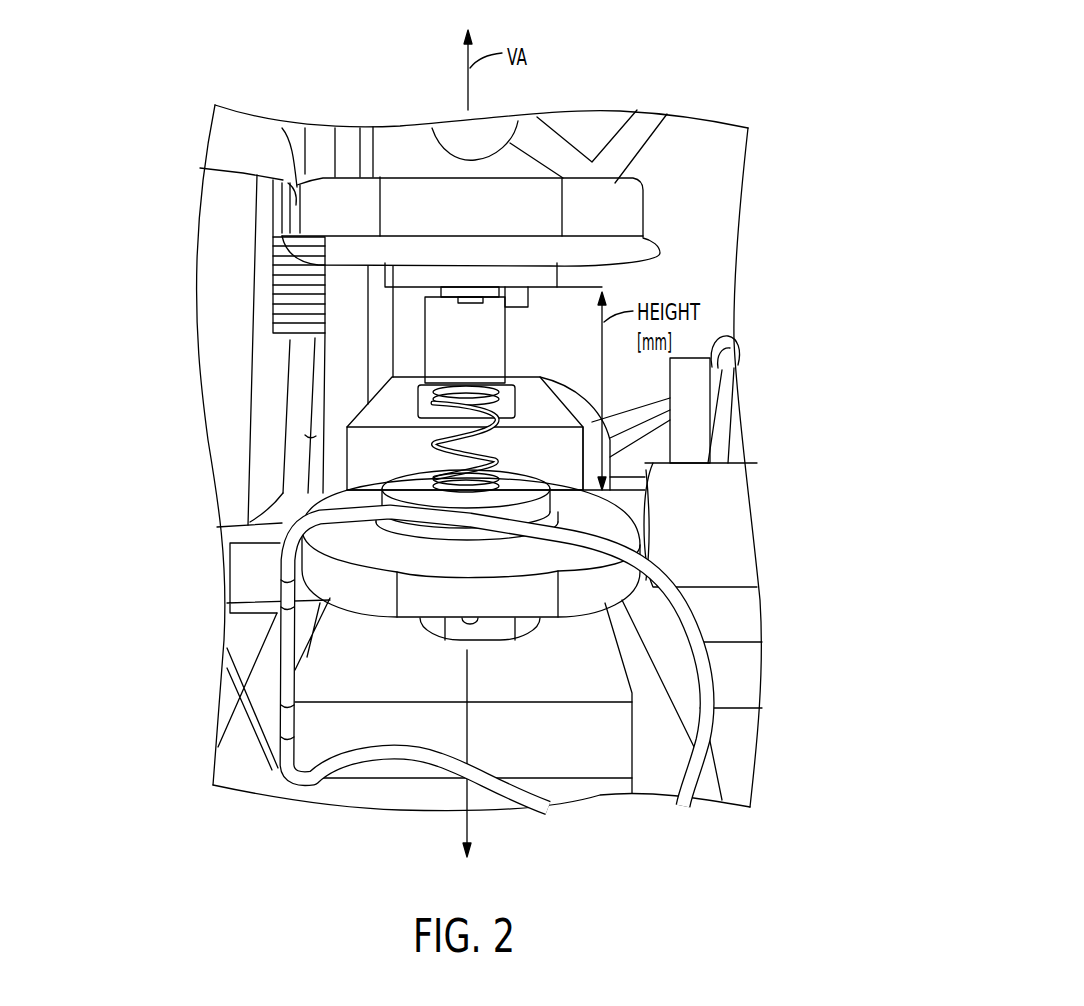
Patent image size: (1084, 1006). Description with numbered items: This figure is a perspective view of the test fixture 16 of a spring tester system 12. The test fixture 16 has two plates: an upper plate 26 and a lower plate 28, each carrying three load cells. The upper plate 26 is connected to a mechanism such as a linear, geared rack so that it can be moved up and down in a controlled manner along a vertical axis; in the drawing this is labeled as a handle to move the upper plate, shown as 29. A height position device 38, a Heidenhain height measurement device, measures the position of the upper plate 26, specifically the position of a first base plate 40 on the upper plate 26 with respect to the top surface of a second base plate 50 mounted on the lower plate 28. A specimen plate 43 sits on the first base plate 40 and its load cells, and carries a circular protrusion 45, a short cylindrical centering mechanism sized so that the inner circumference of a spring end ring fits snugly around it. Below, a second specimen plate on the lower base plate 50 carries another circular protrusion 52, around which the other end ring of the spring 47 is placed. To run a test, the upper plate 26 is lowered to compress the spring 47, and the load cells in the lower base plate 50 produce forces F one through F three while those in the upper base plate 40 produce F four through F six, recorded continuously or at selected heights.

The spring tester system 12 is at (588, 762).
The test fixture 16 is at (133, 207).
The upper plate 26 is at (637, 218).
The lower plate 28 is at (623, 567).
The handle to move upper plate 29 is at (732, 392).
The height position device 38 is at (306, 352).
The first base plate 40 is at (492, 272).
The specimen plate 43 is at (440, 289).
The circular protrusion 45 is at (468, 303).
The spring 47 is at (433, 480).
The lower base plate 50 is at (403, 510).
The circular protrusion 52 is at (490, 475).